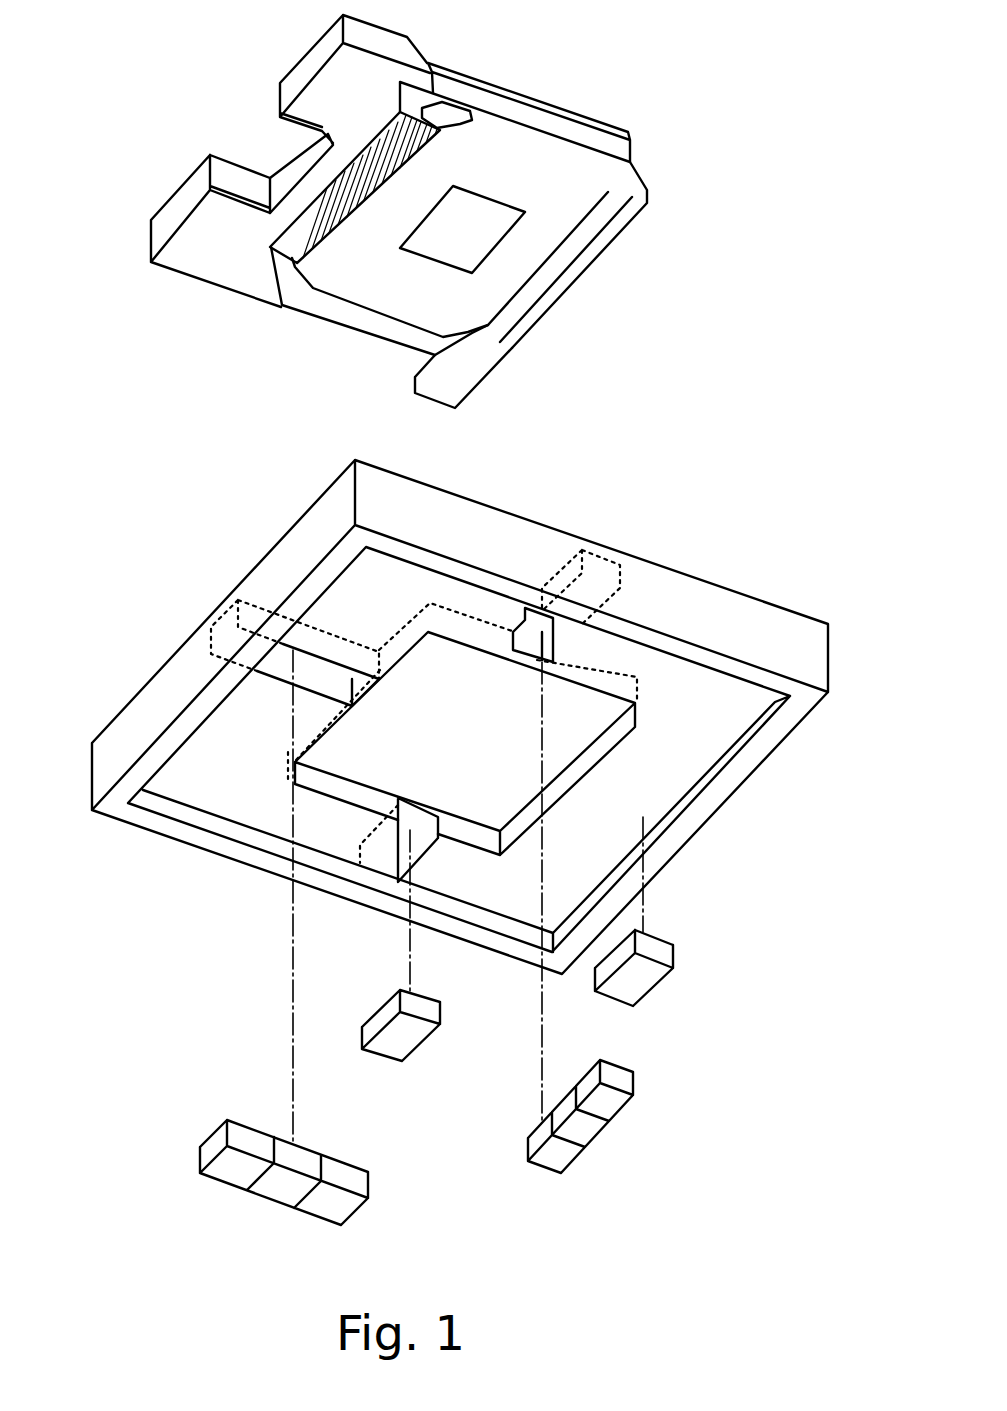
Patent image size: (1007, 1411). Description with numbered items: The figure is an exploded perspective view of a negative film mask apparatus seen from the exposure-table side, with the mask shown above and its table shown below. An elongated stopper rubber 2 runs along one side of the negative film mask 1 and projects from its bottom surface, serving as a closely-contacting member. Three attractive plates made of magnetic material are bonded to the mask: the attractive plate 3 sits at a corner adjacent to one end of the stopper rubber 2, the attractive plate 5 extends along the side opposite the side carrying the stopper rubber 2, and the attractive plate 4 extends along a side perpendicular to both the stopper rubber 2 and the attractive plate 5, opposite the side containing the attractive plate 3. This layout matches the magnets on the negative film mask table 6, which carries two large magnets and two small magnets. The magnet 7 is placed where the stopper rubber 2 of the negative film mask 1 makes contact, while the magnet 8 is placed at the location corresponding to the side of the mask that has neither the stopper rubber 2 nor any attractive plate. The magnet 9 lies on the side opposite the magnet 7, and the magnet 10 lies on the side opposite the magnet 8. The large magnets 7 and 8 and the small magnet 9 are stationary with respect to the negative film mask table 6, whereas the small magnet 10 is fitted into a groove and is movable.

The negative film mask 1 is at (615, 118).
The stopper rubber 2 is at (410, 138).
The attractive plate 3 is at (507, 92).
The attractive plate 4 is at (363, 315).
The attractive plate 5 is at (587, 235).
The negative film mask table 6 is at (638, 548).
The large magnet 7 is at (364, 1180).
The large magnet 8 is at (593, 1133).
The small magnet 9 is at (653, 980).
The small magnet 10 is at (417, 1037).